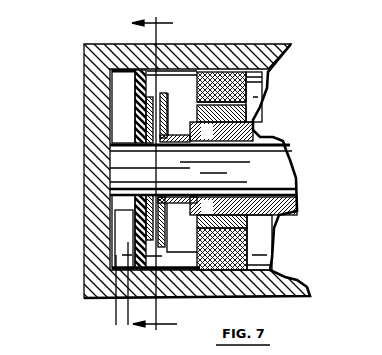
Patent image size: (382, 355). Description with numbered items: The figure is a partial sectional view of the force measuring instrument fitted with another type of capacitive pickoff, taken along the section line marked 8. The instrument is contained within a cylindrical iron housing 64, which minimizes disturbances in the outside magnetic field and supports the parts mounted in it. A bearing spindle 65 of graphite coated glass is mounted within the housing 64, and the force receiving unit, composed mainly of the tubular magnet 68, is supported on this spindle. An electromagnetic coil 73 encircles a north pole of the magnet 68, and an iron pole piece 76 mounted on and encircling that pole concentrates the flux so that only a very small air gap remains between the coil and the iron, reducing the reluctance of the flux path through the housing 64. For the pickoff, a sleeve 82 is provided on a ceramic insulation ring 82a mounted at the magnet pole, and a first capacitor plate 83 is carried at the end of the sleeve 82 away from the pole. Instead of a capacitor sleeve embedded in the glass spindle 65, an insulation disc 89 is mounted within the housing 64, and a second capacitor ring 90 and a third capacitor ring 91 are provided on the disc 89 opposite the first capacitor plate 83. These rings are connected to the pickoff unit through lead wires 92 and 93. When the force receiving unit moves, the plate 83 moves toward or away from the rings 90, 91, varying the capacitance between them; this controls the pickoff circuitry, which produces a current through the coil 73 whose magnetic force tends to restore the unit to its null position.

The section line 8- 8 is at (161, 173).
The housing 64 is at (232, 50).
The bearing spindle 65 is at (114, 173).
The tubular magnet 68 is at (259, 127).
The electromagnetic coil 73 is at (253, 80).
The iron pole piece 76 is at (248, 107).
The sleeve 82 is at (177, 133).
The ceramic insulation ring 82a is at (192, 207).
The first capacitor plate 83 is at (167, 101).
The insulation disc 89 is at (133, 98).
The second capacitor ring 90 is at (138, 107).
The third capacitor ring 91 is at (140, 133).
The lead wire 92 is at (138, 283).
The lead wire 93 is at (115, 311).